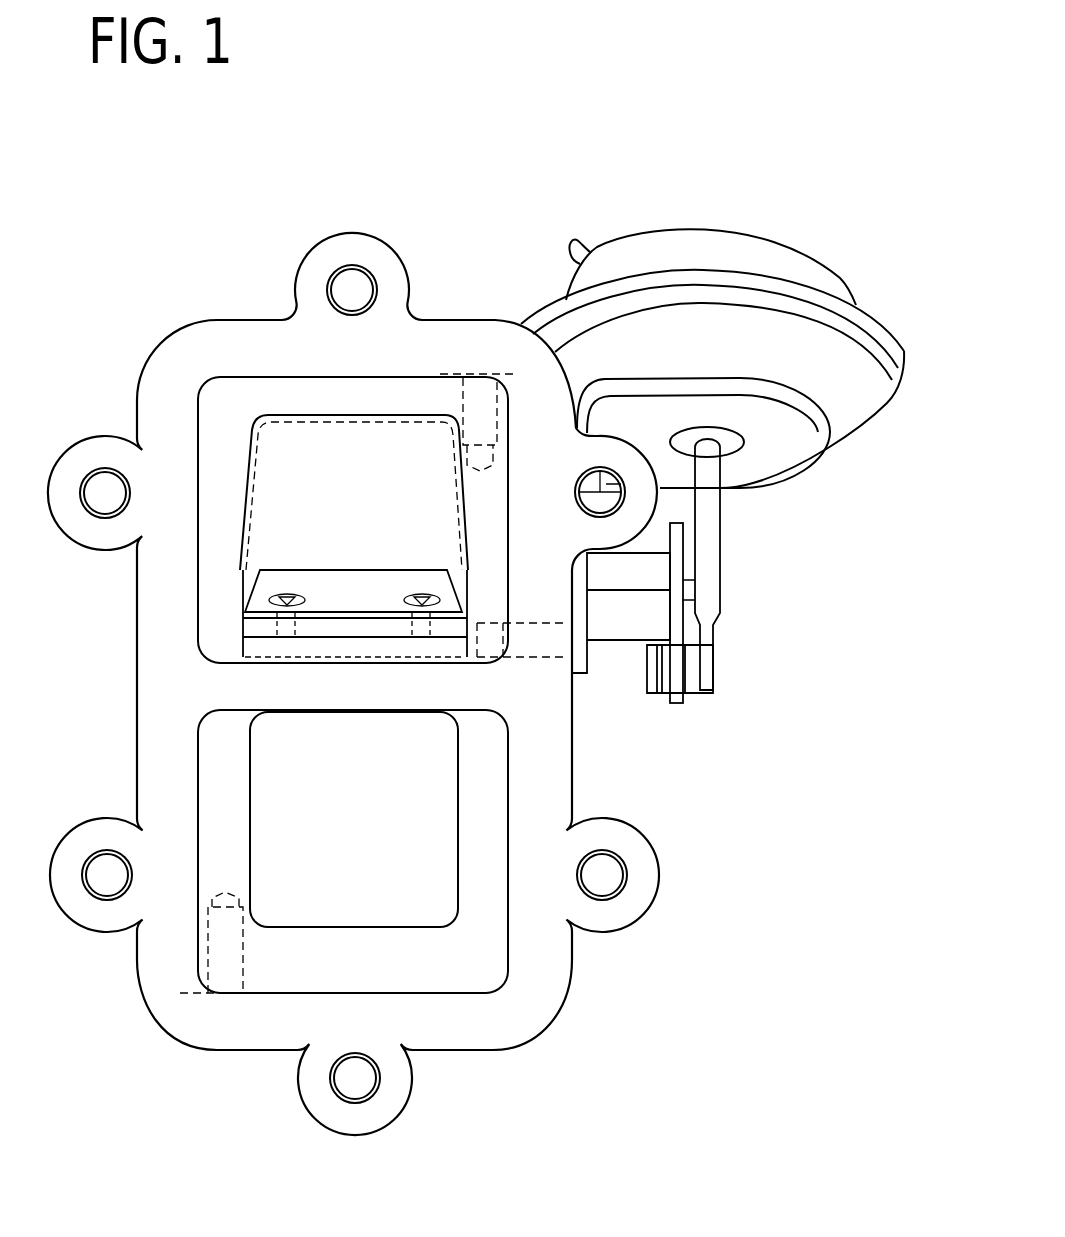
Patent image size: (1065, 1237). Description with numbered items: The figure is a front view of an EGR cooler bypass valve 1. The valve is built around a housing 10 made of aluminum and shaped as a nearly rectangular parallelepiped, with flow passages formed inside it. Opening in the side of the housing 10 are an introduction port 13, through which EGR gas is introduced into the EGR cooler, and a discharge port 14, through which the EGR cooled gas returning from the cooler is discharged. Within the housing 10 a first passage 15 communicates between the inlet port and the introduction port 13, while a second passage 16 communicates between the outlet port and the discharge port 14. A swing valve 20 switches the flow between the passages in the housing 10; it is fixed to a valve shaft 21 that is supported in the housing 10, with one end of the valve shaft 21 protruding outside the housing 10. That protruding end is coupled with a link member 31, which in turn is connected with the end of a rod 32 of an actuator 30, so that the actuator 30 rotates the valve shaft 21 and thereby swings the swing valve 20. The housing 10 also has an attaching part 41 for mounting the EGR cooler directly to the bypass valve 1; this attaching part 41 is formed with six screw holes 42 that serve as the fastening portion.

The EGR cooler bypass valve 1 is at (703, 68).
The housing 10 is at (243, 304).
The introduction port 13 is at (213, 515).
The discharge port 14 is at (220, 778).
The first passage 15 is at (369, 515).
The second passage 16 is at (369, 834).
The swing valve 20 is at (337, 583).
The valve shaft 21 is at (345, 628).
The actuator 30 is at (816, 218).
The link member 31 is at (677, 627).
The rod 32 is at (707, 547).
The attaching part 41 is at (547, 977).
The screw holes 42 is at (604, 872).